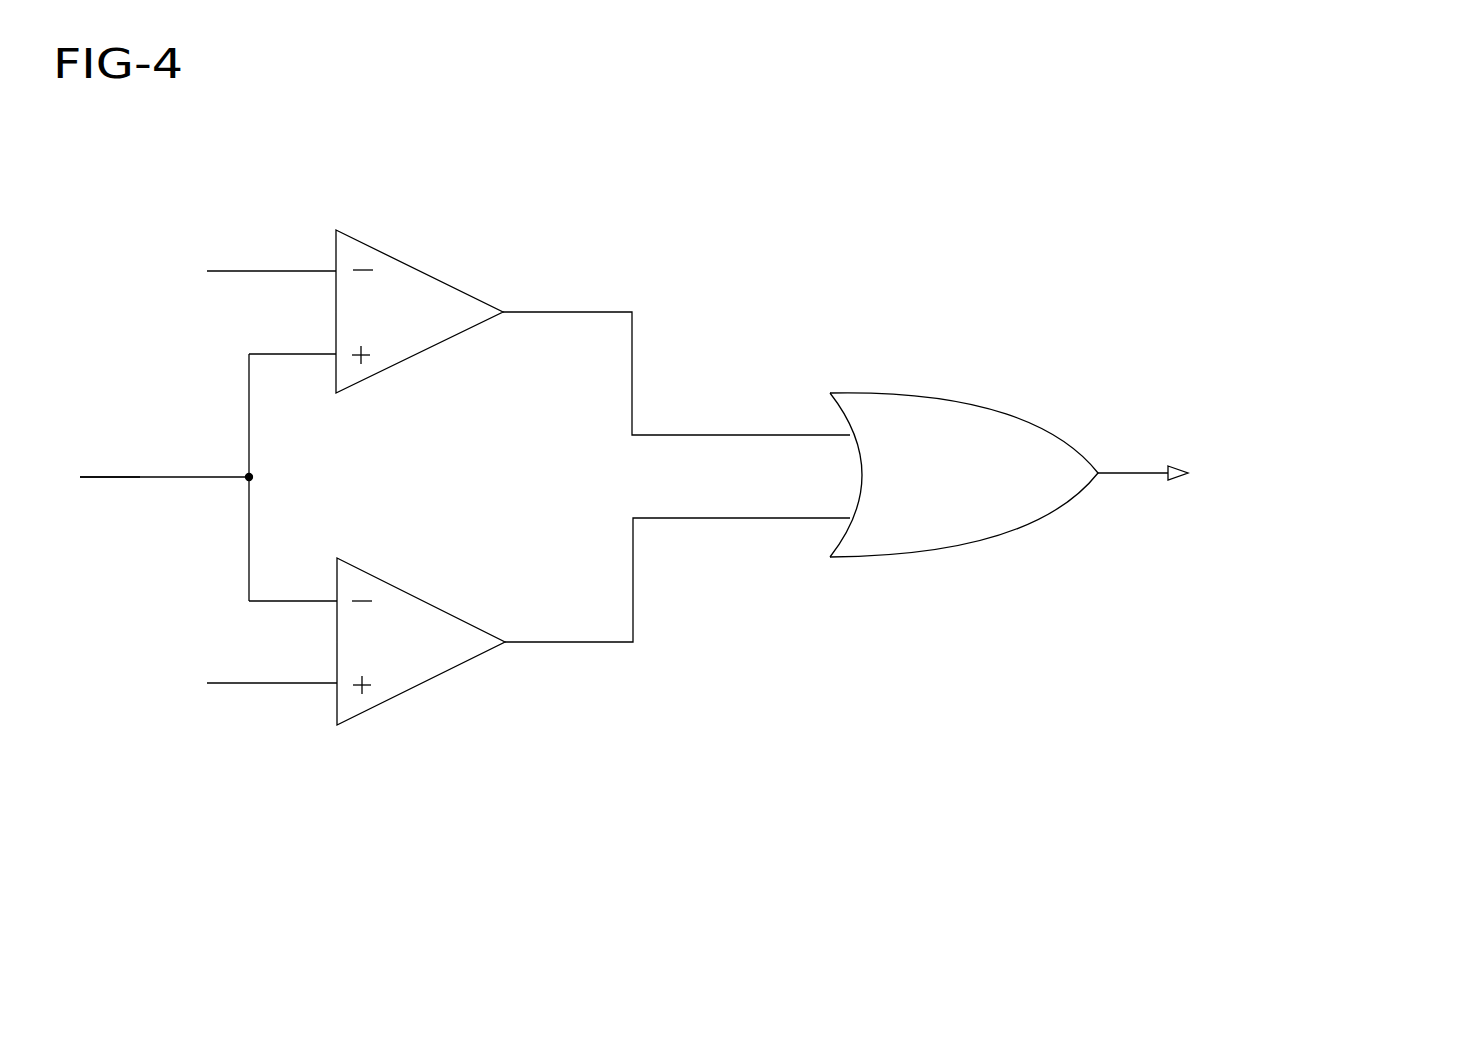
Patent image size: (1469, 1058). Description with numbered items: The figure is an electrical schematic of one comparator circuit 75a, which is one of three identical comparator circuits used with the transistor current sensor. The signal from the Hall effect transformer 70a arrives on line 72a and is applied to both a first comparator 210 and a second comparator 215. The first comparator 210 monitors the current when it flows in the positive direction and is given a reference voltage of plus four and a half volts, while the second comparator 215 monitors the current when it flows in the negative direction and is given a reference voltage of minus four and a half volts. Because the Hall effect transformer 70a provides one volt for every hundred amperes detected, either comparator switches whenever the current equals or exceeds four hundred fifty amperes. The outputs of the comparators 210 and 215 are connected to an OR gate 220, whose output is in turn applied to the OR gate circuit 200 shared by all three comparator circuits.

The comparator circuit 75a is at (1070, 249).
The line 72a is at (165, 477).
The Hall effect transformer 70a is at (142, 527).
The first comparator 210 is at (432, 273).
The second comparator 215 is at (418, 687).
The OR gate 220 is at (960, 557).
The OR gate circuit 200 is at (1283, 476).